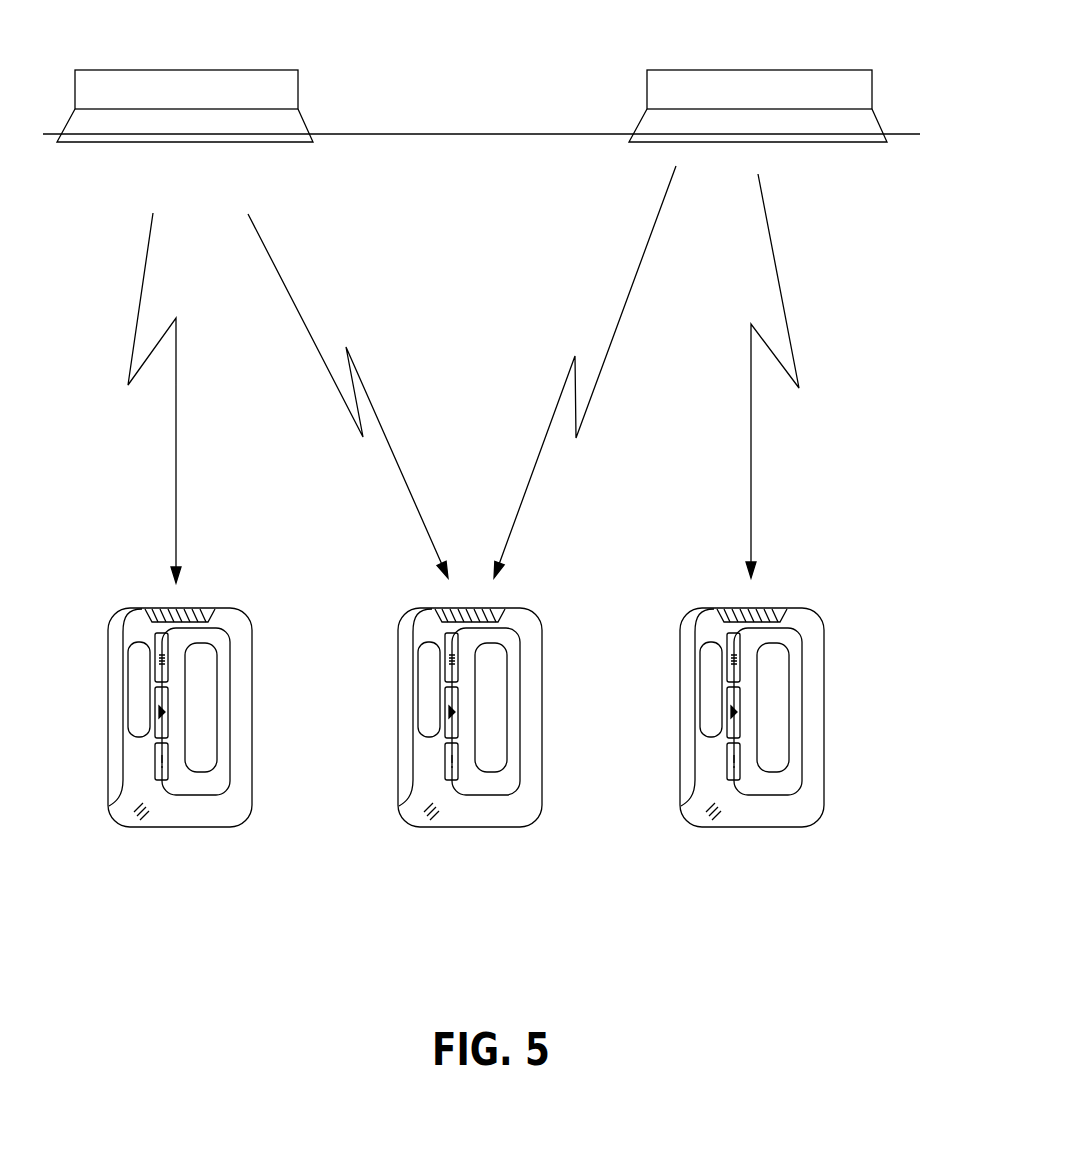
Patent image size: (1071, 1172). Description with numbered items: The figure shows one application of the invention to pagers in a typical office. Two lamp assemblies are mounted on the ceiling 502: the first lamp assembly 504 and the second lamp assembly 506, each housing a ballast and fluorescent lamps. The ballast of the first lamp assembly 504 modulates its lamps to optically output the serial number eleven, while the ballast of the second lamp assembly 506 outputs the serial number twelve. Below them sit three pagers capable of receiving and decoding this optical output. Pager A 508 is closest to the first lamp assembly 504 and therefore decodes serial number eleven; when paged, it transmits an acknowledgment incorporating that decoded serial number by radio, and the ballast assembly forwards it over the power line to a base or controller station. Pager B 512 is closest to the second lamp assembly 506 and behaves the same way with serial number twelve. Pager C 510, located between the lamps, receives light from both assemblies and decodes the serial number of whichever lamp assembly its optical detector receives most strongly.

The ceiling 502 is at (567, 120).
The lamp assembly 1 504 is at (330, 162).
The lamp assembly 2 506 is at (618, 158).
The pager A 508 is at (254, 595).
The pager C 510 is at (545, 598).
The pager B 512 is at (819, 600).